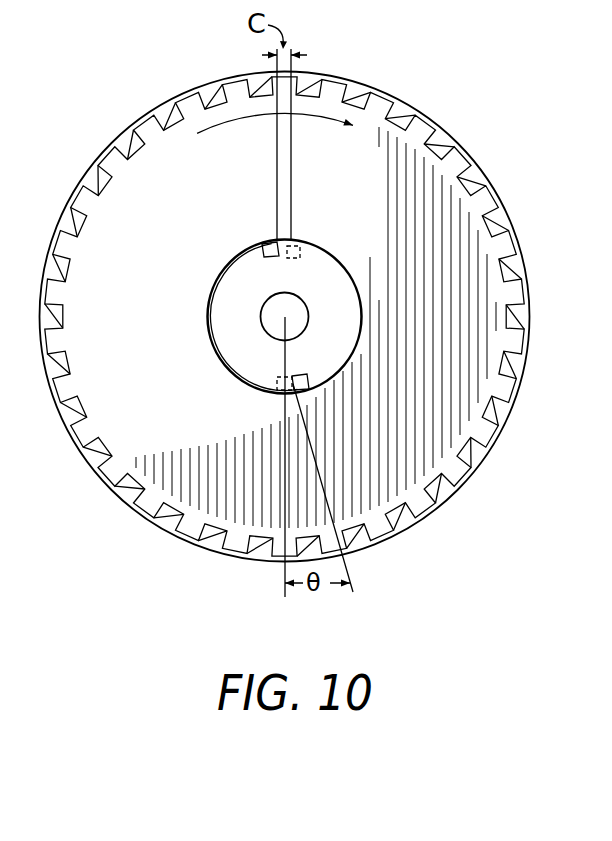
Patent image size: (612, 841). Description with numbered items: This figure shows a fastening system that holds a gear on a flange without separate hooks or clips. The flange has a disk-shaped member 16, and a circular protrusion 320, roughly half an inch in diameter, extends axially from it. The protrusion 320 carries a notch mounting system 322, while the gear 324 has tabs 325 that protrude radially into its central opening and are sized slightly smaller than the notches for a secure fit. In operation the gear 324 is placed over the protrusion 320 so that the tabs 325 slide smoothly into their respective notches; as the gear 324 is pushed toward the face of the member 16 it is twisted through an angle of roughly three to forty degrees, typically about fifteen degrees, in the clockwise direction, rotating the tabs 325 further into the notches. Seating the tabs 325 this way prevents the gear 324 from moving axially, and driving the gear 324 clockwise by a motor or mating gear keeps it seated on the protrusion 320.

The member 16 is at (451, 134).
The gear 324 is at (472, 212).
The protrusion 320 is at (232, 307).
The notch mounting system 322 is at (270, 262).
The tabs 325 is at (297, 257).